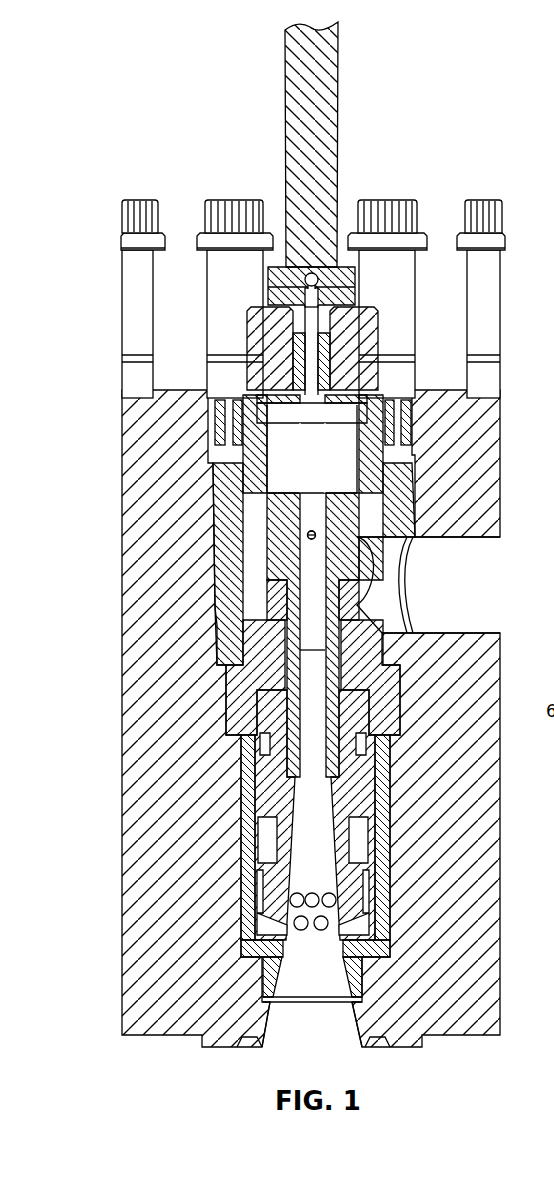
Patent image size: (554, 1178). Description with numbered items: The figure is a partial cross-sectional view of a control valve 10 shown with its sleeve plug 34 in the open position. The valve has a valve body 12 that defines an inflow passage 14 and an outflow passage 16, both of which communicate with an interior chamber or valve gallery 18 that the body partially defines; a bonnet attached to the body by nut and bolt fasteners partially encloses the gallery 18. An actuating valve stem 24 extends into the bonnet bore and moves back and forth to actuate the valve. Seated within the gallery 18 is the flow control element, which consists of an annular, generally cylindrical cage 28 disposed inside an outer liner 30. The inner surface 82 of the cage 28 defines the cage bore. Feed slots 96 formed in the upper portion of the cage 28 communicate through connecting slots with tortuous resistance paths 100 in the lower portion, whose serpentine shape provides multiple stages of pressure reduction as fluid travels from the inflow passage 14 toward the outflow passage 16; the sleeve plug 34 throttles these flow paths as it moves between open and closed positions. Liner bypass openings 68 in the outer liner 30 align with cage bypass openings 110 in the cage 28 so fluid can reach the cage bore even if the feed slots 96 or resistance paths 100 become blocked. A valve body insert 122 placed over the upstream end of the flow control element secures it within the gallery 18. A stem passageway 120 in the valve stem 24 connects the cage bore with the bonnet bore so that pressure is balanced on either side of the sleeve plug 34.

The control valve 10 is at (138, 64).
The valve body 12 is at (116, 450).
The inflow passage 14 is at (505, 582).
The outflow passage 16 is at (340, 1048).
The valve gallery 18 is at (248, 572).
The actuating valve stem 24 is at (332, 120).
The cage 28 is at (274, 710).
The outer liner 30 is at (232, 908).
The sleeve plug 34 is at (266, 372).
The liner bypass openings 68 is at (307, 536).
The inner surface 82 is at (299, 797).
The feed slots 96 is at (287, 645).
The tortuous resistance paths 100 is at (260, 832).
The cage bypass openings 110 is at (187, 536).
The stem passageway 120 is at (273, 286).
The valve body insert 122 is at (231, 597).